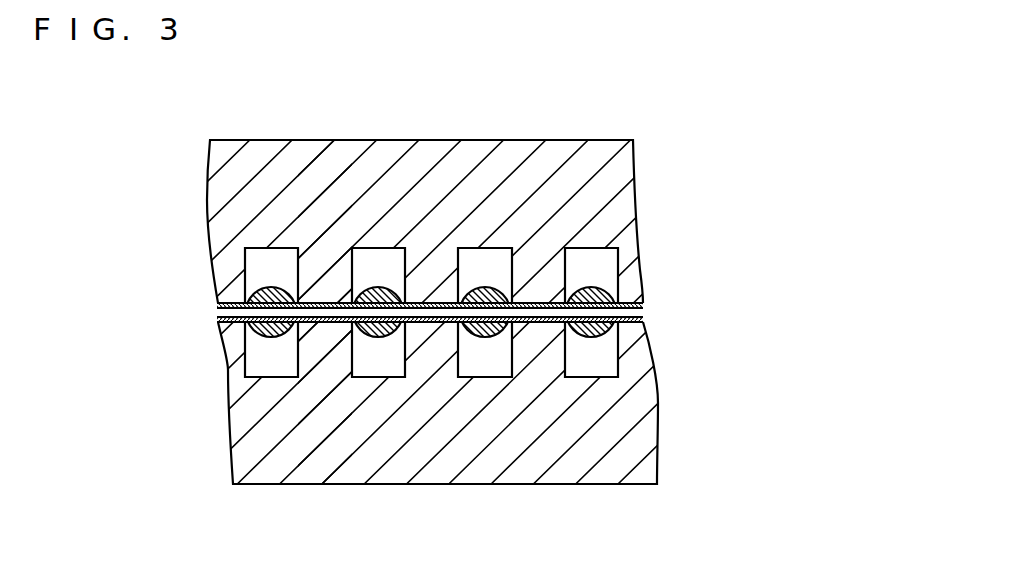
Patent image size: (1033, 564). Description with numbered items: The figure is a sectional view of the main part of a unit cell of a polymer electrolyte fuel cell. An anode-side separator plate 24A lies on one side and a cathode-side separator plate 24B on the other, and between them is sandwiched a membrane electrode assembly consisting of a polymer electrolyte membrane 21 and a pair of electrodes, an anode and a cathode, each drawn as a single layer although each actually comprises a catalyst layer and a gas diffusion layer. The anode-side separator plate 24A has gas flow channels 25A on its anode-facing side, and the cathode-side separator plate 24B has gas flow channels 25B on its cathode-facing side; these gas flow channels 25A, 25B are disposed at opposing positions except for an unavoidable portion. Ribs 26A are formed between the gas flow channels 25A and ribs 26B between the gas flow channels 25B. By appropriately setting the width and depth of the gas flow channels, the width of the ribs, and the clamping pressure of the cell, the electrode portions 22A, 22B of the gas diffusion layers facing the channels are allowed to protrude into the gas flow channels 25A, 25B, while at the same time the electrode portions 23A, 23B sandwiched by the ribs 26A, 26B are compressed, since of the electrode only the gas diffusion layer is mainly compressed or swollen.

The polymer electrolyte membrane 21 is at (643, 311).
The electrode portion 22A is at (597, 290).
The electrode portion 22B is at (597, 335).
The electrode portion 23A is at (537, 303).
The electrode portion 23B is at (537, 323).
The anode-side separator plate 24A is at (478, 140).
The cathode-side separator plate 24B is at (513, 484).
The gas flow channel 25A is at (373, 265).
The gas flow channel 25B is at (382, 362).
The rib 26A is at (322, 267).
The rib 26B is at (323, 362).